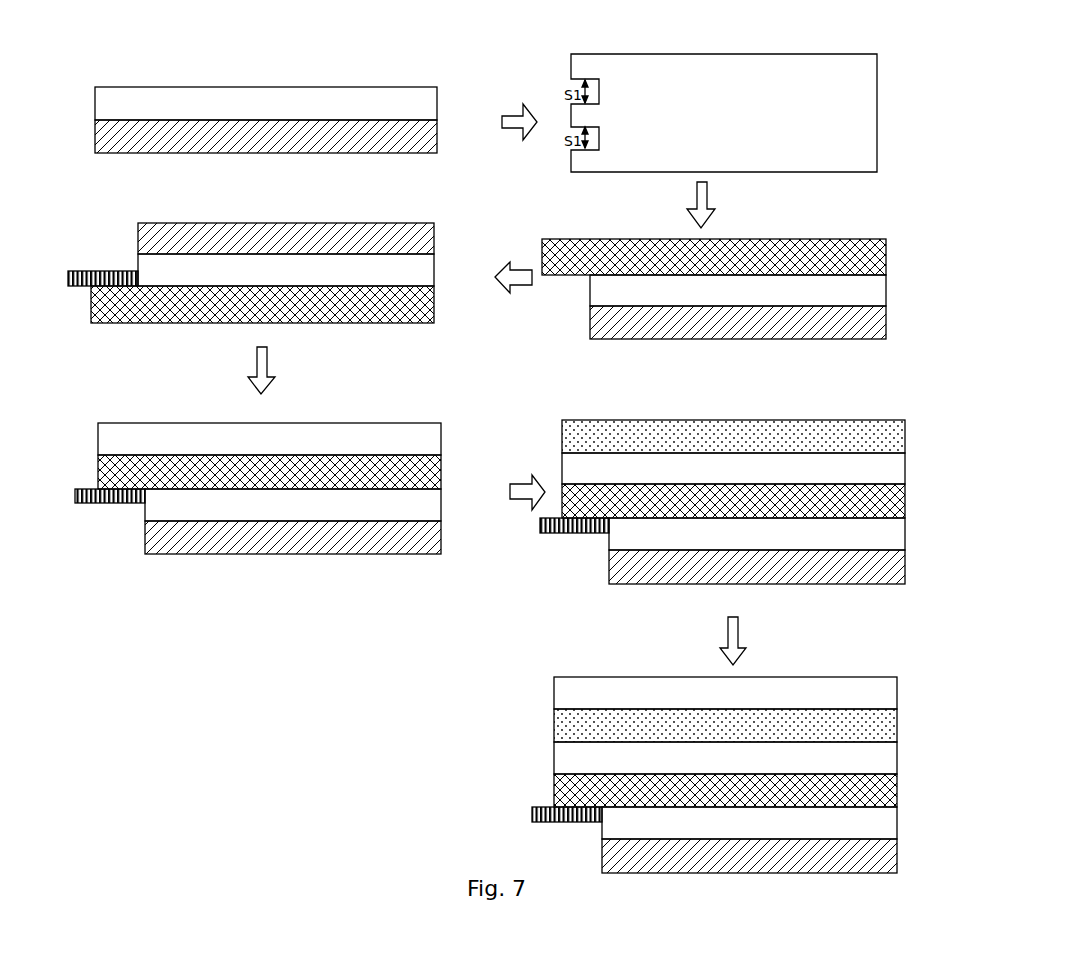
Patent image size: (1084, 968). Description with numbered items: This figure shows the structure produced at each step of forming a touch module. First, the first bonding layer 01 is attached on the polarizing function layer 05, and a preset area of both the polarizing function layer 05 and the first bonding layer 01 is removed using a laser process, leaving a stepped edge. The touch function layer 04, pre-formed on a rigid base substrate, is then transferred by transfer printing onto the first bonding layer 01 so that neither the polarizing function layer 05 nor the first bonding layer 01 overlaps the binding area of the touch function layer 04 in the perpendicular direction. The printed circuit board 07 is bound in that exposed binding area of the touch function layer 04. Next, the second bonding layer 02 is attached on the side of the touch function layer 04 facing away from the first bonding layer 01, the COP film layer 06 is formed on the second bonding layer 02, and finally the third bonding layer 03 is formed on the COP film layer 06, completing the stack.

The first bonding layer 01 is at (420, 95).
The second bonding layer 02 is at (425, 435).
The third bonding layer 03 is at (880, 697).
The touch function layer 04 is at (865, 250).
The polarizing function layer 05 is at (415, 138).
The COP film layer 06 is at (888, 435).
The printed circuit board 07 is at (68, 280).